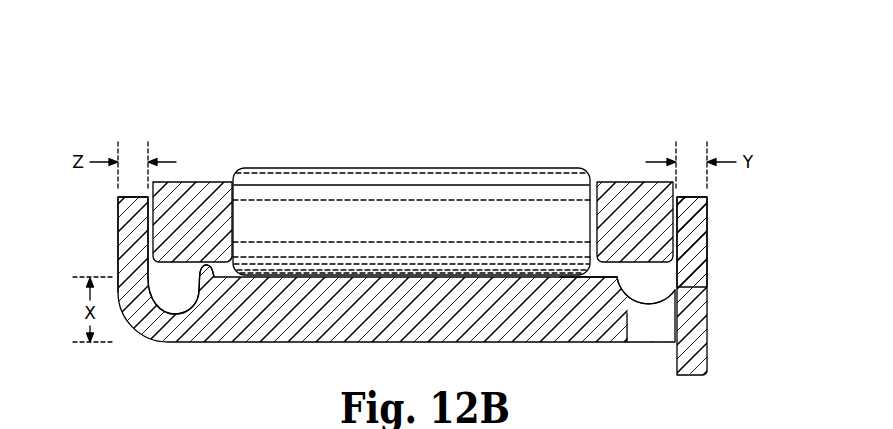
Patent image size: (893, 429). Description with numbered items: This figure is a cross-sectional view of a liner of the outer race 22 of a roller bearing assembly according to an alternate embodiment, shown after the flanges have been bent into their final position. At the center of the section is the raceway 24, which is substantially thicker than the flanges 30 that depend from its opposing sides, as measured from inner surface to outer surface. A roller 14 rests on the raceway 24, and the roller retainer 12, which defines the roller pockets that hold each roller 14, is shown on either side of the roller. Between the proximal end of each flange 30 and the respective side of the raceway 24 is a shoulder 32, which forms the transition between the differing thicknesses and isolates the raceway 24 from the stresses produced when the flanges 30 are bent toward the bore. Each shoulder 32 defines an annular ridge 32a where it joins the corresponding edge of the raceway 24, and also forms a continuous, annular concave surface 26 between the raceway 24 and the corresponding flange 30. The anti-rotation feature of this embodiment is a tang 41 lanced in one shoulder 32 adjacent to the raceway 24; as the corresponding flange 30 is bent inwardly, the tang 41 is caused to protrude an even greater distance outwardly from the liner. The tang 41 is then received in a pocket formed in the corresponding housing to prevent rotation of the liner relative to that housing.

The roller retainer 12 is at (620, 181).
The roller 14 is at (360, 166).
The outer race 22 is at (722, 279).
The raceway 24 is at (200, 266).
The concave surface 26 is at (648, 310).
The flange 30 is at (118, 238).
The shoulder 32 is at (206, 306).
The annular ridge 32a is at (613, 279).
The tang 41 is at (708, 355).